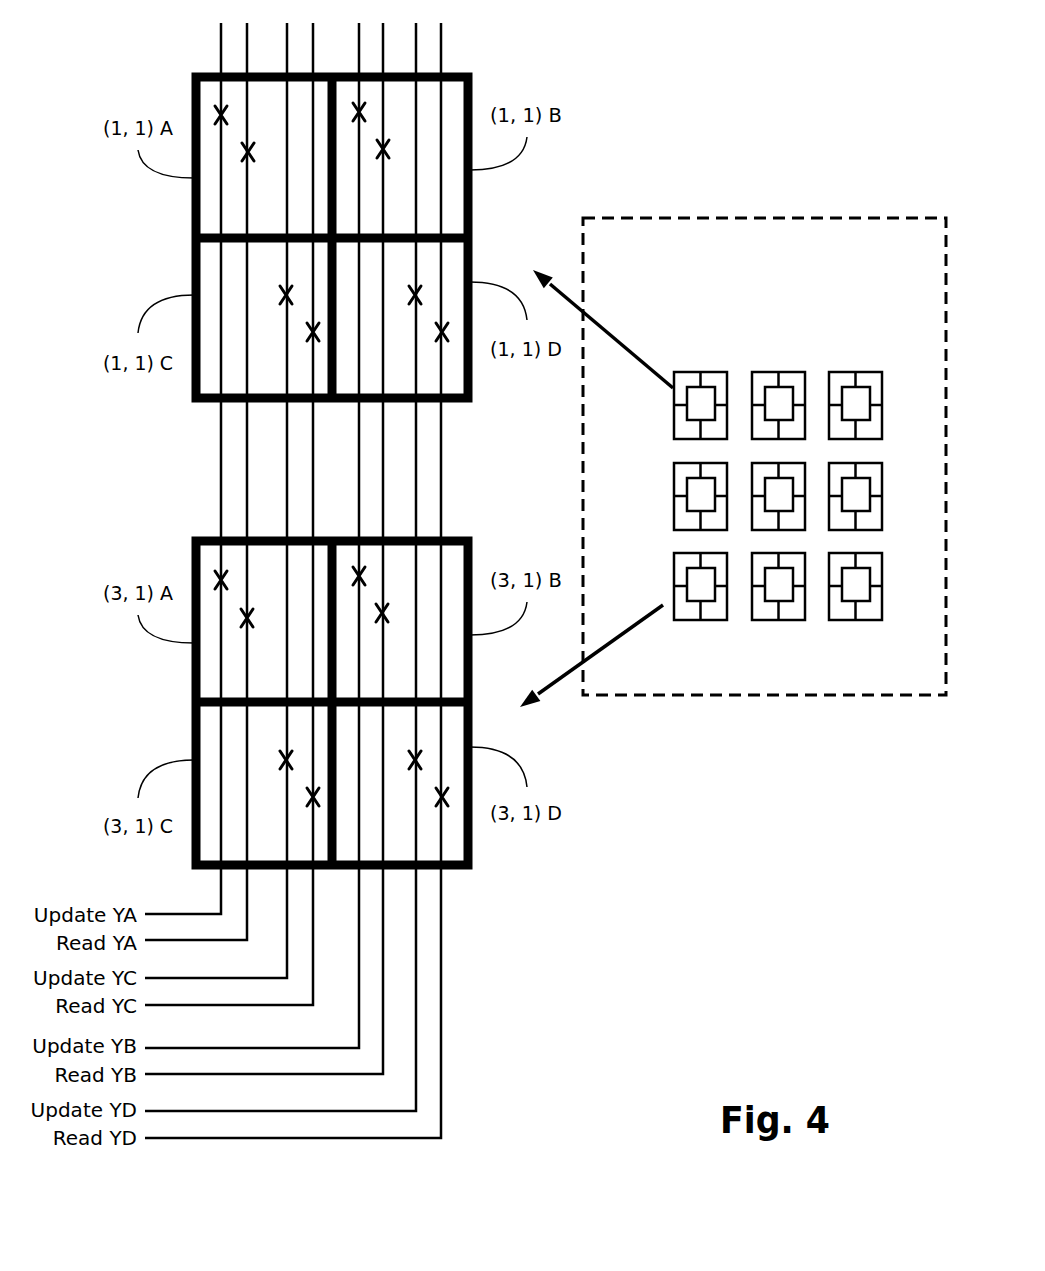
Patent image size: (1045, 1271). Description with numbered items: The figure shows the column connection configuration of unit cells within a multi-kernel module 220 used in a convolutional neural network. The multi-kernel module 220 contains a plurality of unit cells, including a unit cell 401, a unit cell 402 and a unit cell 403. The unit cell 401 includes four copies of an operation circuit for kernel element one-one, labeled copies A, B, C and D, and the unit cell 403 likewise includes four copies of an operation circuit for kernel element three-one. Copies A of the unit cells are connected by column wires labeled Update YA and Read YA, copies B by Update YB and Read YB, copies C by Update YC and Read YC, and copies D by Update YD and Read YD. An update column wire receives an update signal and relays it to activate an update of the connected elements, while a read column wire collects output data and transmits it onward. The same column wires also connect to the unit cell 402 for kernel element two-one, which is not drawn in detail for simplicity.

The multi-kernel module 220 is at (895, 253).
The unit cell 401 is at (713, 372).
The unit cell 402 is at (675, 522).
The unit cell 403 is at (713, 620).